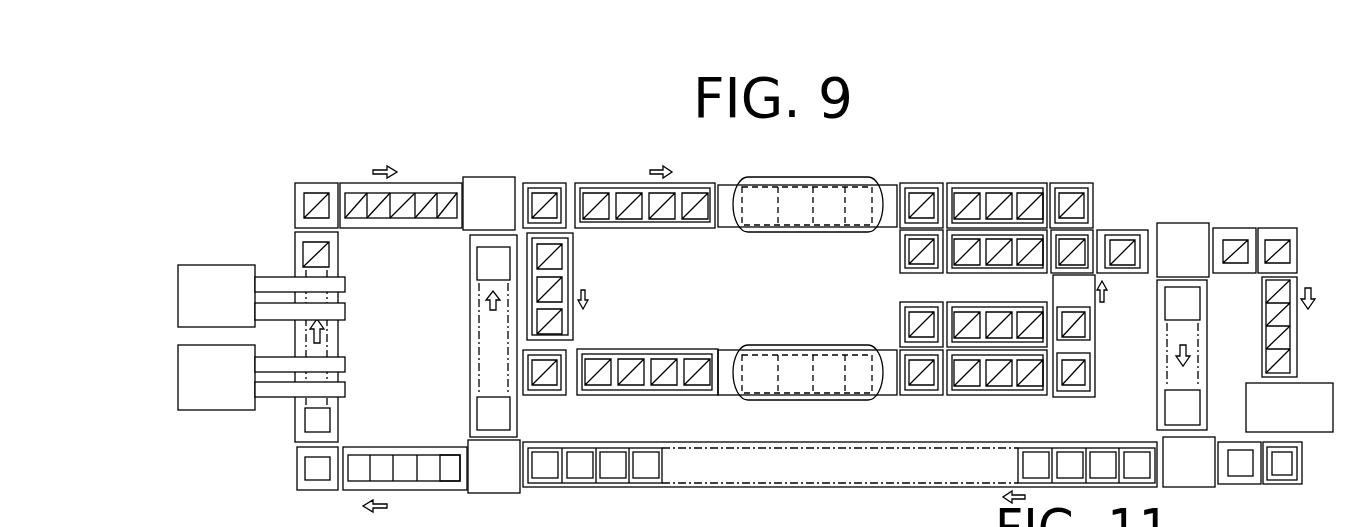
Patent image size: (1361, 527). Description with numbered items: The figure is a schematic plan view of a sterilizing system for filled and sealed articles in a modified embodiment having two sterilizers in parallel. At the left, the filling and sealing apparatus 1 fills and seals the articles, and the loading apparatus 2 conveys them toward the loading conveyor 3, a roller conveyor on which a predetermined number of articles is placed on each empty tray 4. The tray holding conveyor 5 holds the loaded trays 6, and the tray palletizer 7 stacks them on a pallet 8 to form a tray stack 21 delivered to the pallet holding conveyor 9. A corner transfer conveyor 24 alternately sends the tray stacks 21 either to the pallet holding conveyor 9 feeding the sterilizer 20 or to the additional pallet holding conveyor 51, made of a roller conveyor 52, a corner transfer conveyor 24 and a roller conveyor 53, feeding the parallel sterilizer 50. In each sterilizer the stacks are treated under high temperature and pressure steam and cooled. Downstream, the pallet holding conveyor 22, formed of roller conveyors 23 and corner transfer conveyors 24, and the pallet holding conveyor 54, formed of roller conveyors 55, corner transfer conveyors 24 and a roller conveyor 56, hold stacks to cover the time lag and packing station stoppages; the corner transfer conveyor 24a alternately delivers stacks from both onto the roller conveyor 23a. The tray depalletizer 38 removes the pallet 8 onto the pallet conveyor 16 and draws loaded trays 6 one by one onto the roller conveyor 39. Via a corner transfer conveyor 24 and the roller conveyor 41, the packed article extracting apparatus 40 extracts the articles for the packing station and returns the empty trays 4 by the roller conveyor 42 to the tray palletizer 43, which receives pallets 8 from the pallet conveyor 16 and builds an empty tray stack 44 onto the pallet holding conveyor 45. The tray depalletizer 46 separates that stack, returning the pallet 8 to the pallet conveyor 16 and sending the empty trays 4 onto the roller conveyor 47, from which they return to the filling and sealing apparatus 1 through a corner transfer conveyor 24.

The filling and sealing apparatus 1 is at (220, 265).
The loading apparatus 2 is at (276, 277).
The loading conveyor 3 is at (295, 427).
The empty tray 4 is at (330, 419).
The tray holding conveyor 5 is at (350, 183).
The loaded tray 6 is at (403, 195).
The tray palletizer 7 is at (488, 185).
The pallet 8 is at (482, 263).
The pallet holding conveyor 9 is at (629, 183).
The pallet conveyor 16 is at (470, 338).
The sterilizer 20 is at (803, 183).
The tray stack 21 is at (688, 205).
The pallet holding conveyor 22 is at (997, 185).
The roller conveyor 23 is at (1028, 185).
The roller conveyor 23a is at (1119, 232).
The corner transfer conveyor 24 is at (312, 183).
The corner transfer conveyor 24a is at (1083, 232).
The tray depalletizer 38 is at (1187, 228).
The roller conveyor 39 is at (1222, 237).
The packed article extracting apparatus 40 is at (1317, 390).
The roller conveyor 41 is at (1297, 283).
The roller conveyor 42 is at (1233, 484).
The tray palletizer 43 is at (1190, 483).
The tray stack 44 is at (615, 468).
The pallet holding conveyor 45 is at (700, 487).
The tray depalletizer 46 is at (495, 482).
The roller conveyor 47 is at (405, 485).
The sterilizer 50 is at (804, 349).
The pallet holding conveyor 51 is at (622, 314).
The roller conveyor 52 is at (573, 265).
The roller conveyor 53 is at (675, 350).
The pallet holding conveyor 54 is at (983, 354).
The roller conveyor 55 is at (1016, 283).
The roller conveyor 56 is at (1090, 343).